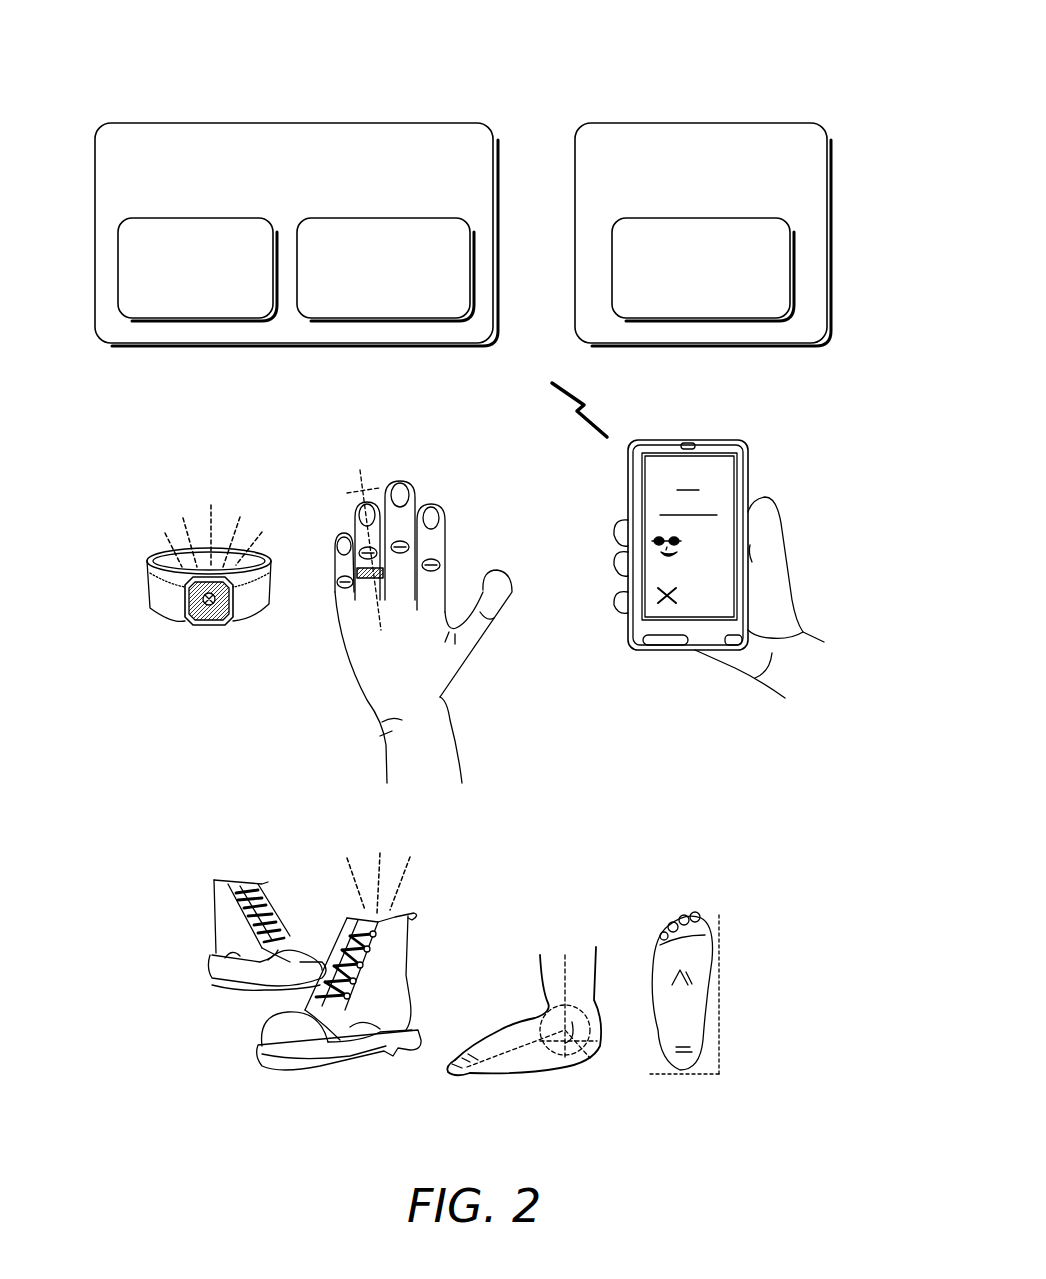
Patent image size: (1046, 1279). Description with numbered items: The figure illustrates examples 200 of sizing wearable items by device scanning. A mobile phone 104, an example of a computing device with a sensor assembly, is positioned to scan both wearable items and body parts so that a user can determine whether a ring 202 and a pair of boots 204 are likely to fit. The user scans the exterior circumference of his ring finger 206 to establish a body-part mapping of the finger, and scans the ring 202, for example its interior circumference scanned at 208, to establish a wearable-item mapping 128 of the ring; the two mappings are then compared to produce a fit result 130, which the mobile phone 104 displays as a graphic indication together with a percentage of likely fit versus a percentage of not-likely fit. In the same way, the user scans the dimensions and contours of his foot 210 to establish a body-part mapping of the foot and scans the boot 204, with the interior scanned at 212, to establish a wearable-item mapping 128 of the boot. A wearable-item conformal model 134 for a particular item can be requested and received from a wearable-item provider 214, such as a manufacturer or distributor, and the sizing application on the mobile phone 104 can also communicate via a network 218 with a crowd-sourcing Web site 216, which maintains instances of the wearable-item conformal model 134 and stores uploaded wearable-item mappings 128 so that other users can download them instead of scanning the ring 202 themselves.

The examples of sizing wearable items by device scanning 200 is at (677, 59).
The crowd-sourcing Web site 216 is at (178, 168).
The wearable-item mapping 128 is at (180, 301).
The wearable-item conformal model 134 is at (717, 301).
The wearable-item provider 214 is at (593, 168).
The network 218 is at (578, 455).
The ring 202 is at (228, 655).
The interior circumference scan of the ring 208 is at (178, 535).
The ring finger 206 is at (370, 481).
The mobile phone 104 is at (762, 463).
The fit result 130 is at (712, 477).
The pair of boots 204 is at (333, 1105).
The interior scan of the boot 212 is at (365, 870).
The foot 210 is at (617, 928).